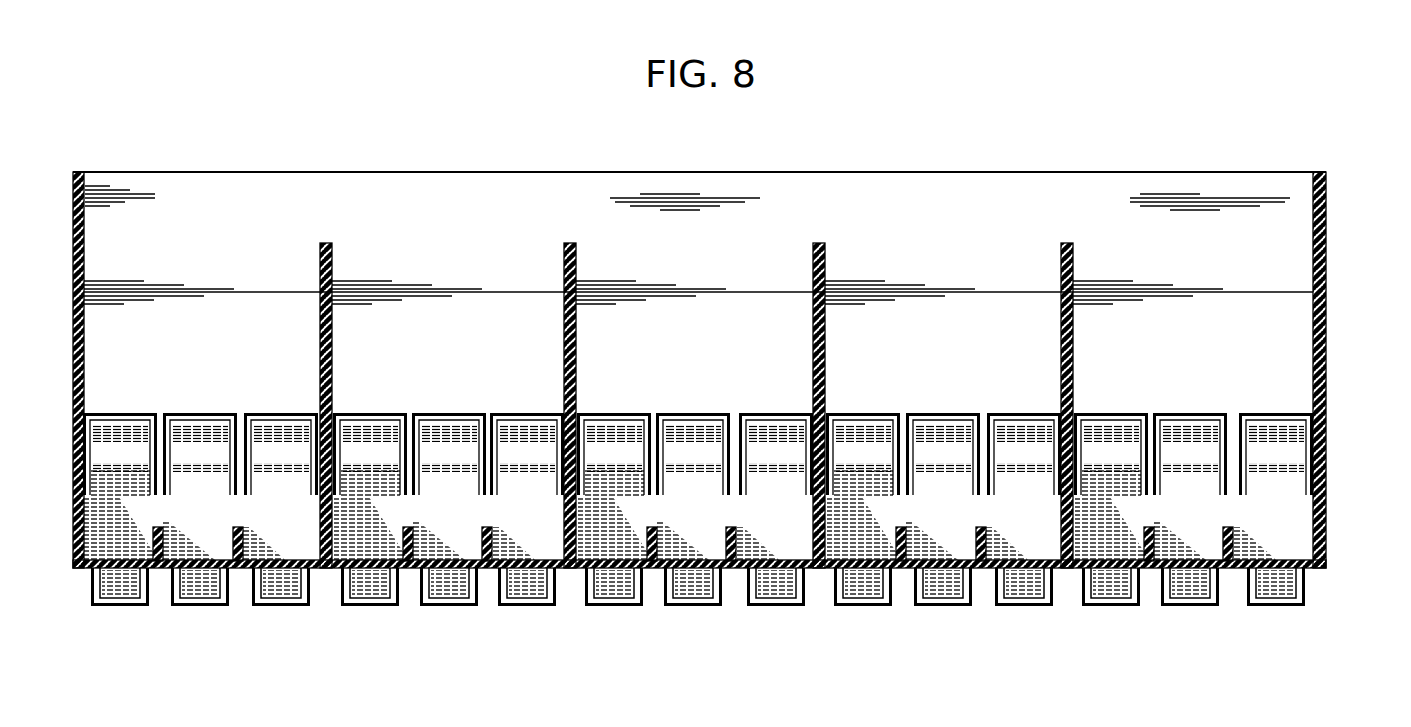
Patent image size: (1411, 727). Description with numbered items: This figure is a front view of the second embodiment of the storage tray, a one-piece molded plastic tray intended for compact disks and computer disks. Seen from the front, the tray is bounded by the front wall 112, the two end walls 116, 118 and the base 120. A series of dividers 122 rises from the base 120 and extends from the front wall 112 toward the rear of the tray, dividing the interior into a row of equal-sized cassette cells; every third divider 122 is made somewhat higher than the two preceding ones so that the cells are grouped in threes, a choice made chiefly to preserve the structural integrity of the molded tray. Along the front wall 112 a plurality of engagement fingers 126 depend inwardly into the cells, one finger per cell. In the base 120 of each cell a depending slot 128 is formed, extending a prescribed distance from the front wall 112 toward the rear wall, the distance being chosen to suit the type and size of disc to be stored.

The front wall 112 is at (101, 238).
The end wall 116 is at (1326, 324).
The end wall 118 is at (73, 368).
The base 120 is at (80, 570).
The divider 122 is at (332, 262).
The engagement finger 126 is at (101, 453).
The slot 128 is at (125, 590).